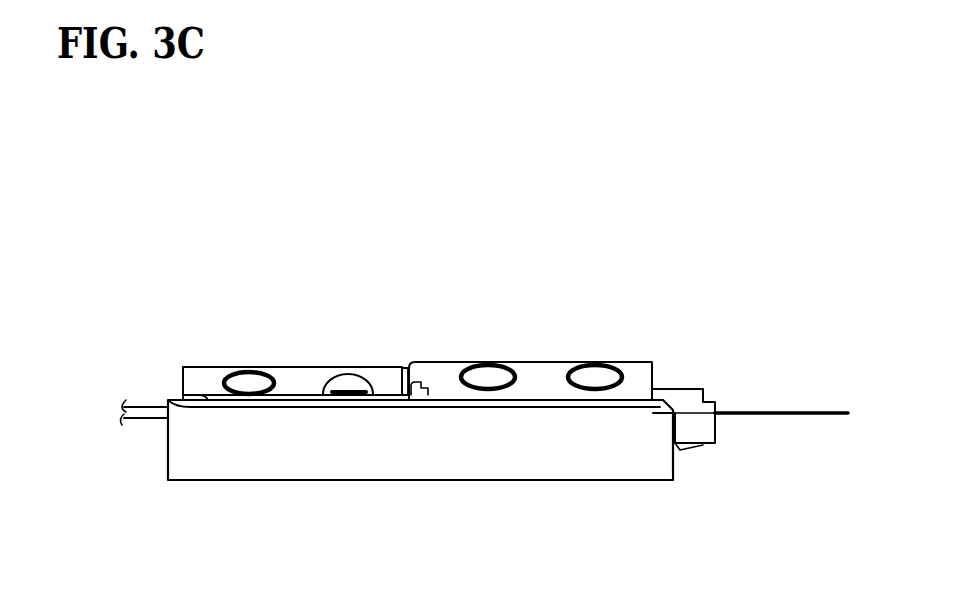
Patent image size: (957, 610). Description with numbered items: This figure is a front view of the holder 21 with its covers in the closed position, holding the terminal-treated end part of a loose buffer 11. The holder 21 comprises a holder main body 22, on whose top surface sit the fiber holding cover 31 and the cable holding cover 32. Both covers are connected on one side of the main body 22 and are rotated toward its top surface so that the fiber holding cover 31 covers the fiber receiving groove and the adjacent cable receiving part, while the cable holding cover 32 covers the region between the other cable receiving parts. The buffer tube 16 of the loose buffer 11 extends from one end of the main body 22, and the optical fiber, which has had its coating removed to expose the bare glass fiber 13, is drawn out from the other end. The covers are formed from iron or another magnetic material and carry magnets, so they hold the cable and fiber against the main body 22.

The loose buffer 11 is at (145, 400).
The bare glass fiber 13 is at (798, 417).
The buffer tube 16 is at (143, 422).
The holder 21 is at (574, 278).
The holder main body 22 is at (528, 458).
The fiber holding cover 31 is at (530, 362).
The cable holding cover 32 is at (263, 367).